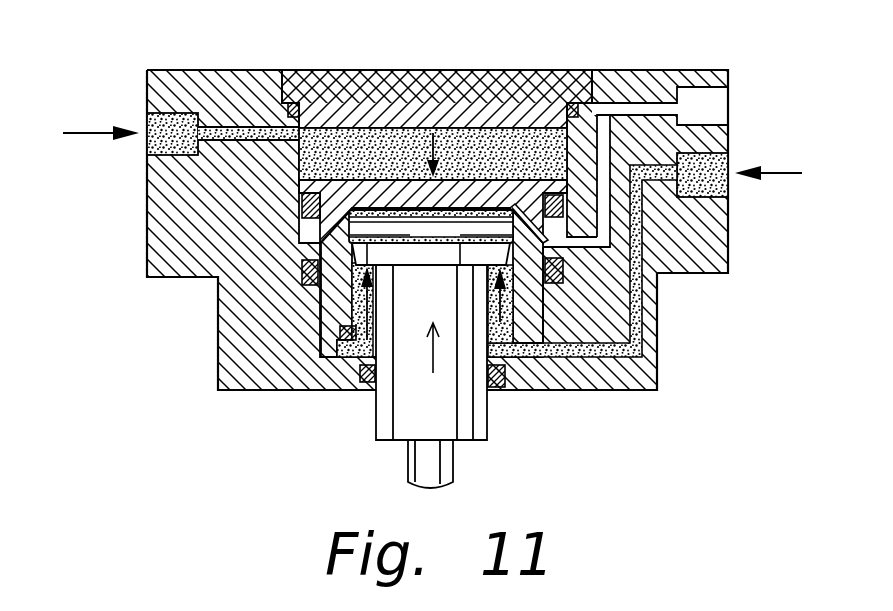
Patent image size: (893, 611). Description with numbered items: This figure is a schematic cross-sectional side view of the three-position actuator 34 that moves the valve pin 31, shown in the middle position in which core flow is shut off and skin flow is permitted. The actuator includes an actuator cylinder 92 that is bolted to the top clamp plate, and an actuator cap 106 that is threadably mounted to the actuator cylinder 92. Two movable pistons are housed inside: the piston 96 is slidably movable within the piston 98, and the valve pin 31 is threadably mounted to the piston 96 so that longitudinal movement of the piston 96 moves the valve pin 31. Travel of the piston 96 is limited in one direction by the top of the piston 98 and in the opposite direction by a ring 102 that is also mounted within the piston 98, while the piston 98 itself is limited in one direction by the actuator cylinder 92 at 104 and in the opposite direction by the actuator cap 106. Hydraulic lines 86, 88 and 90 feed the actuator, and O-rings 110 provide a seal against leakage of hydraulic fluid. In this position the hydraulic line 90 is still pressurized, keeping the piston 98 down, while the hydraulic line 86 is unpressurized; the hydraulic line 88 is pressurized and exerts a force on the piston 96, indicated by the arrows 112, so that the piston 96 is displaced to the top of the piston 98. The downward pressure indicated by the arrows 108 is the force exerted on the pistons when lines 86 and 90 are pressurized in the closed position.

The three-position actuator 34 is at (482, 40).
The valve pin 31 is at (453, 470).
The hydraulic line 86 is at (717, 108).
The hydraulic line 88 is at (720, 167).
The hydraulic line 90 is at (147, 127).
The actuator cylinder 92 is at (652, 70).
The piston 96 is at (385, 432).
The piston 98 is at (343, 318).
The ring 102 is at (543, 328).
The limit location on actuator cylinder 104 is at (332, 328).
The actuator cap 106 is at (300, 70).
The arrows 108 is at (433, 147).
The O-rings 110 is at (578, 103).
The arrows 112 is at (322, 298).